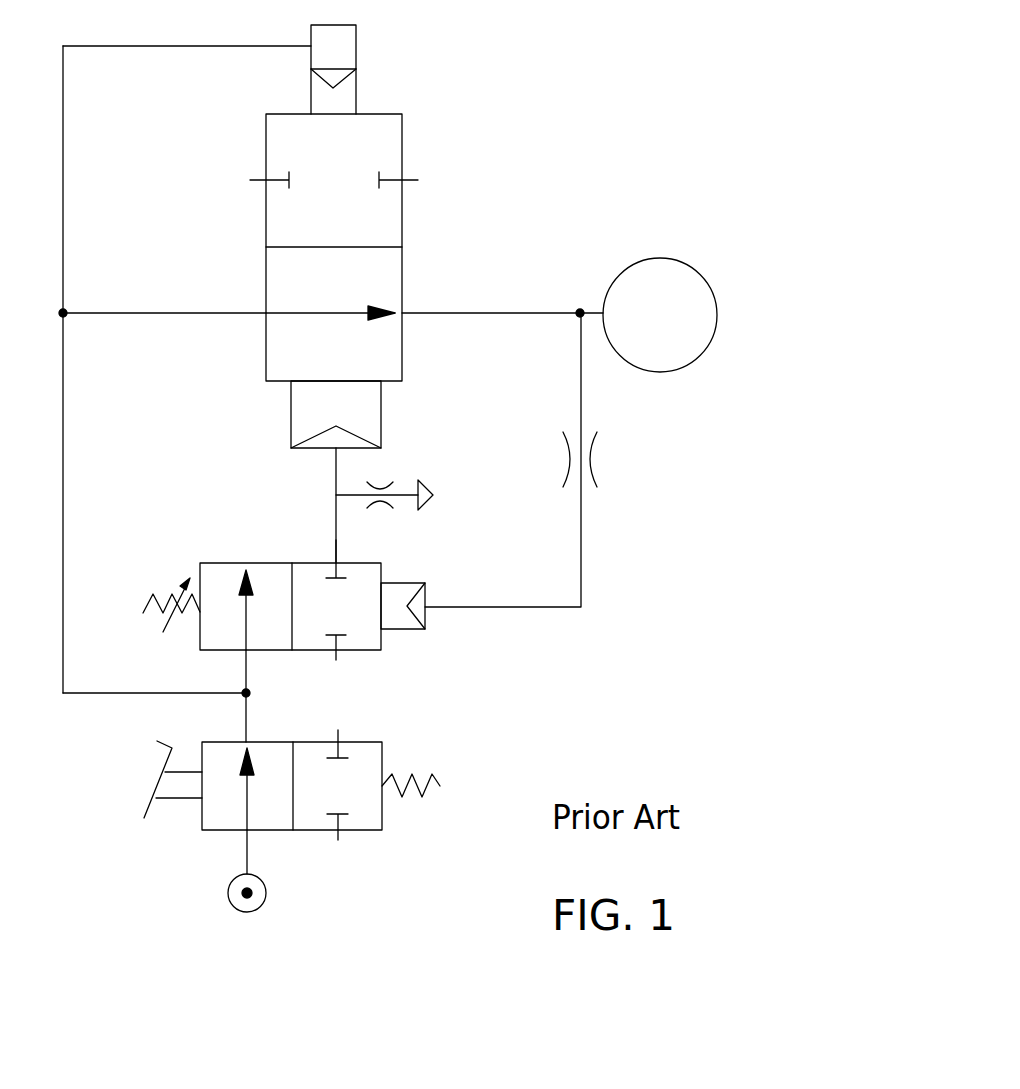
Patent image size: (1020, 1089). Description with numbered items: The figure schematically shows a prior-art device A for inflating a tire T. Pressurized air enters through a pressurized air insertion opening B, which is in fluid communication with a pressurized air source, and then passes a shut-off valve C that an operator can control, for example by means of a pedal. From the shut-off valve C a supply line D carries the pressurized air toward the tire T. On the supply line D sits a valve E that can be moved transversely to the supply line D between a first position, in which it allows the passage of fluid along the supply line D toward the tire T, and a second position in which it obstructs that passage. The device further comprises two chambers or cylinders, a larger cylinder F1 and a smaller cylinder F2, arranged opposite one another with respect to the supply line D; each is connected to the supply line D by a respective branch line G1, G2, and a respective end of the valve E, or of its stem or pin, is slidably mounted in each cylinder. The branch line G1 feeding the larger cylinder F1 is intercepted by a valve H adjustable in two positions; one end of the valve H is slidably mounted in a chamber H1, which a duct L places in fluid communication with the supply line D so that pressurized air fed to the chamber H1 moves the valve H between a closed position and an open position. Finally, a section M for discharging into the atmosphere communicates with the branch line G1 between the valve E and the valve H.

The device A is at (475, 213).
The pressurized air insertion opening B is at (267, 893).
The shut-off valve C is at (382, 830).
The line D is at (64, 395).
The valve E is at (266, 223).
The larger cylinder F1 is at (291, 412).
The smaller cylinder F2 is at (356, 64).
The branch line G1 is at (248, 665).
The branch line G2 is at (122, 47).
The valve adjustable in two positions H is at (277, 562).
The chamber H1 is at (402, 628).
The duct L is at (581, 555).
The section for discharging into the atmosphere M is at (400, 492).
The tire T is at (665, 257).